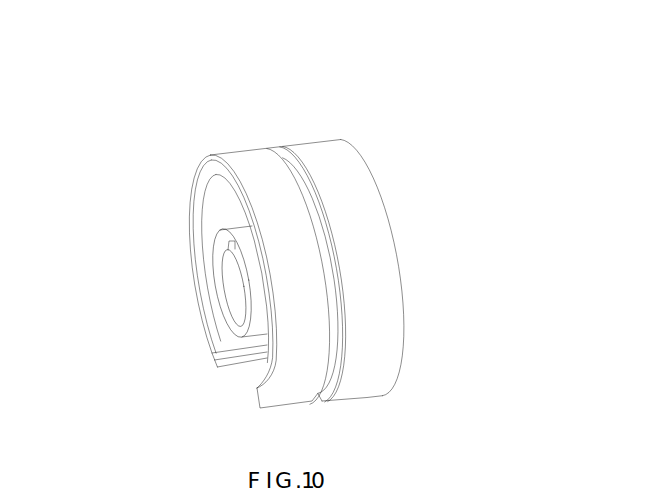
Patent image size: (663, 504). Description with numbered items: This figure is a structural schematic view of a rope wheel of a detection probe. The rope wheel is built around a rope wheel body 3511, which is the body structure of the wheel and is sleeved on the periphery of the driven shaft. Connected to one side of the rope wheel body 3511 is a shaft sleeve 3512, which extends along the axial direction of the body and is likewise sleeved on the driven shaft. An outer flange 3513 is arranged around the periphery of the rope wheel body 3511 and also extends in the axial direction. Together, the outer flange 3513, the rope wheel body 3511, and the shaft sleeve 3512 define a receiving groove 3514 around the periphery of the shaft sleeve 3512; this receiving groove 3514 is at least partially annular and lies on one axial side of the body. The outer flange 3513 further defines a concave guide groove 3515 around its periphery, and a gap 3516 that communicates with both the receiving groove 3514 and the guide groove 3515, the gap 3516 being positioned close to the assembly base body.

The rope wheel body 3511 is at (382, 305).
The shaft sleeve 3512 is at (229, 244).
The outer flange 3513 is at (247, 152).
The receiving groove 3514 is at (222, 202).
The guide groove 3515 is at (303, 146).
The gap 3516 is at (242, 374).